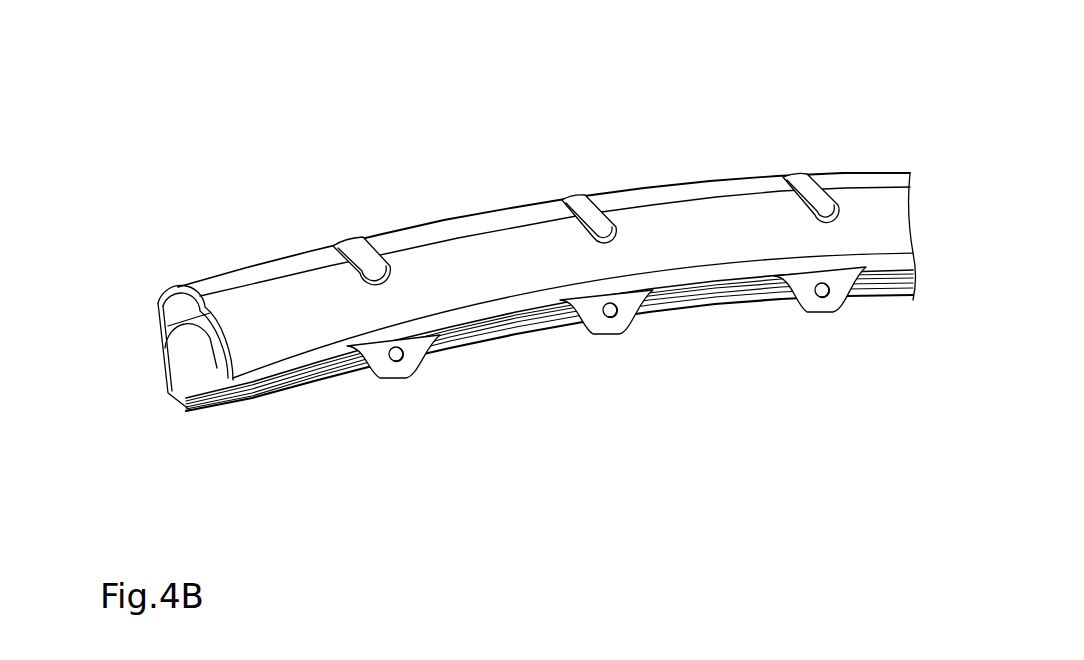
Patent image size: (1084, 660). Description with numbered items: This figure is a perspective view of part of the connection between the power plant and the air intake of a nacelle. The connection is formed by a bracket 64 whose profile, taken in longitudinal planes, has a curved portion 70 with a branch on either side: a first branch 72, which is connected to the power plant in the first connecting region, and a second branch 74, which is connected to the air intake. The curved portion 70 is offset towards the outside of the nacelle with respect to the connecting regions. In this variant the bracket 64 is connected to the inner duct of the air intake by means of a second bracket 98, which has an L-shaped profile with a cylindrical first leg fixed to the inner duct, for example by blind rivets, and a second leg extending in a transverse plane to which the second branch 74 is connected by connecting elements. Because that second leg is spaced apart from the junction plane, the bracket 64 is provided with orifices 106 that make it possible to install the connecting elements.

The bracket 64 is at (485, 277).
The curved portion 70 is at (734, 186).
The first branch 72 is at (293, 322).
The second branch 74 is at (175, 311).
The second bracket 98 is at (178, 364).
The orifices 106 is at (358, 255).